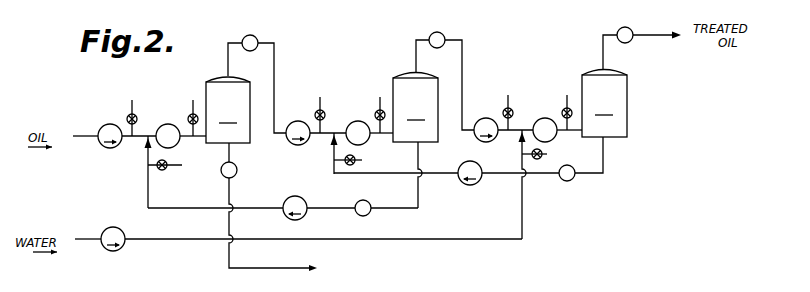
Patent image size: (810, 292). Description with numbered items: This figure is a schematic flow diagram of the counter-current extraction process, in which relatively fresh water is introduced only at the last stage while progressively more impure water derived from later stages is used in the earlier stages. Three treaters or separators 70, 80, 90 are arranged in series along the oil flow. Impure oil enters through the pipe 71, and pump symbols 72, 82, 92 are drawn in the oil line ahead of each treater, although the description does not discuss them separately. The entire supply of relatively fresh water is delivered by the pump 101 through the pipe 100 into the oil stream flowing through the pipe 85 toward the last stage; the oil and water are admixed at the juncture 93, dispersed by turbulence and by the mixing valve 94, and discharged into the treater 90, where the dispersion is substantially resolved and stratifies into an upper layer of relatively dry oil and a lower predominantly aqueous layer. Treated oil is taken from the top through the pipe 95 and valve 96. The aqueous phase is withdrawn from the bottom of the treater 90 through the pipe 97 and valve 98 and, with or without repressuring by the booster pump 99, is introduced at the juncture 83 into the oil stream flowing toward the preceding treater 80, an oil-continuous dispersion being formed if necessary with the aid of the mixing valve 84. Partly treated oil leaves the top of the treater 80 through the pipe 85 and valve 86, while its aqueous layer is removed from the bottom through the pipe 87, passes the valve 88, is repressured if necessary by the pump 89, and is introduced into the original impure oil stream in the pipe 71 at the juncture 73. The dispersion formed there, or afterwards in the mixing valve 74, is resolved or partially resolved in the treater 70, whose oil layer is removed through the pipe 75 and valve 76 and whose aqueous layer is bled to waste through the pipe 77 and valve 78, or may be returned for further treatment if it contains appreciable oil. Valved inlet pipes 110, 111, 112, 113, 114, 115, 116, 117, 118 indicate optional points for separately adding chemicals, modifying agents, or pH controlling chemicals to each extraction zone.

The treater 70 is at (228, 110).
The pipe 71 is at (140, 137).
The first pump 72 is at (108, 124).
The juncture 73 is at (148, 134).
The mixing valve 74 is at (177, 146).
The pipe 75 is at (237, 43).
The valve 76 is at (255, 36).
The pipe 77 is at (231, 190).
The valve 78 is at (237, 170).
The treater 80 is at (415, 108).
The second pump 82 is at (298, 145).
The juncture 83 is at (334, 131).
The mixing valve 84 is at (358, 121).
The pipe 85 is at (417, 40).
The valve 86 is at (440, 32).
The pipe 87 is at (418, 208).
The valve 88 is at (367, 216).
The pump 89 is at (291, 220).
The treater 90 is at (604, 104).
The third pump 92 is at (486, 118).
The juncture 93 is at (522, 128).
The mixing valve 94 is at (545, 118).
The pipe 95 is at (603, 35).
The valve 96 is at (640, 19).
The pipe 97 is at (603, 173).
The valve 98 is at (567, 181).
The booster pump 99 is at (474, 185).
The pipe 100 is at (157, 240).
The pump 101 is at (113, 251).
The valved inlet pipe 110 is at (132, 100).
The valved inlet pipe 111 is at (165, 170).
The valved inlet pipe 112 is at (193, 100).
The valved inlet pipe 113 is at (320, 97).
The valved inlet pipe 114 is at (362, 160).
The valved inlet pipe 115 is at (381, 97).
The valved inlet pipe 116 is at (508, 95).
The valved inlet pipe 117 is at (547, 154).
The valved inlet pipe 118 is at (567, 95).